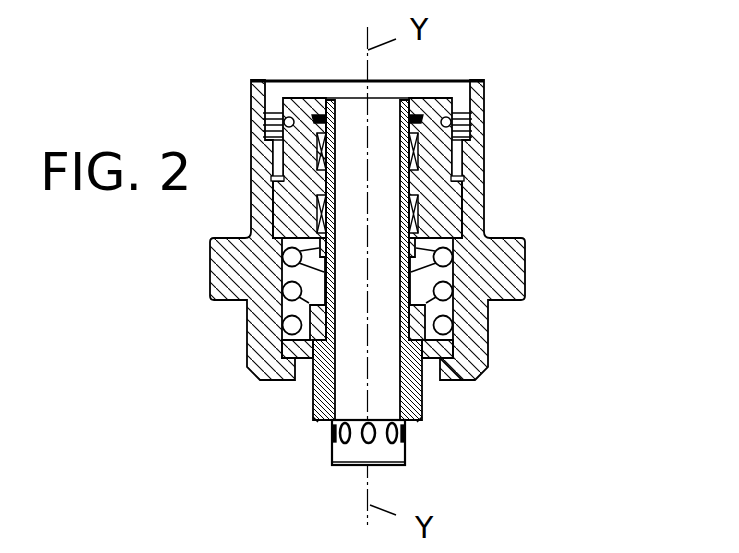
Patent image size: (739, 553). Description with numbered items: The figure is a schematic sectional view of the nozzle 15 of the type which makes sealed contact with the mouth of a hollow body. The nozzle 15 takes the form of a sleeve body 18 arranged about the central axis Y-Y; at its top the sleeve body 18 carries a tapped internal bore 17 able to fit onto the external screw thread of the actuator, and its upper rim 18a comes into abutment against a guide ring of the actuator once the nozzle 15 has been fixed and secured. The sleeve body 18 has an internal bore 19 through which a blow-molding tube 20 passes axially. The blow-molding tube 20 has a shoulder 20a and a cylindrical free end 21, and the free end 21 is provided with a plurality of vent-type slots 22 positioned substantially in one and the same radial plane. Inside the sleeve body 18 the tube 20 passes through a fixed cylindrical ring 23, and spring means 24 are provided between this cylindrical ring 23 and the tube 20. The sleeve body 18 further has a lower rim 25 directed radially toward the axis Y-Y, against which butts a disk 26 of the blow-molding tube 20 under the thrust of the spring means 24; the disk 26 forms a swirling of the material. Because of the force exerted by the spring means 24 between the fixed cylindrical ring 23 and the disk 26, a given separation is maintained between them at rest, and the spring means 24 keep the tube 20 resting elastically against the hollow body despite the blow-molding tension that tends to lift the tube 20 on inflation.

The nozzle 15 is at (423, 260).
The tapped internal bore 17 is at (467, 122).
The sleeve body 18 is at (478, 158).
The upper rim 18a is at (258, 80).
The internal bore 19 is at (457, 320).
The blow-molding tube 20 is at (408, 428).
The shoulder 20a is at (327, 423).
The cylindrical free end 21 is at (402, 455).
The slots 22 is at (333, 445).
The fixed cylindrical ring 23 is at (452, 205).
The spring means 24 is at (437, 302).
The lower rim 25 is at (462, 383).
The disk 26 is at (457, 356).